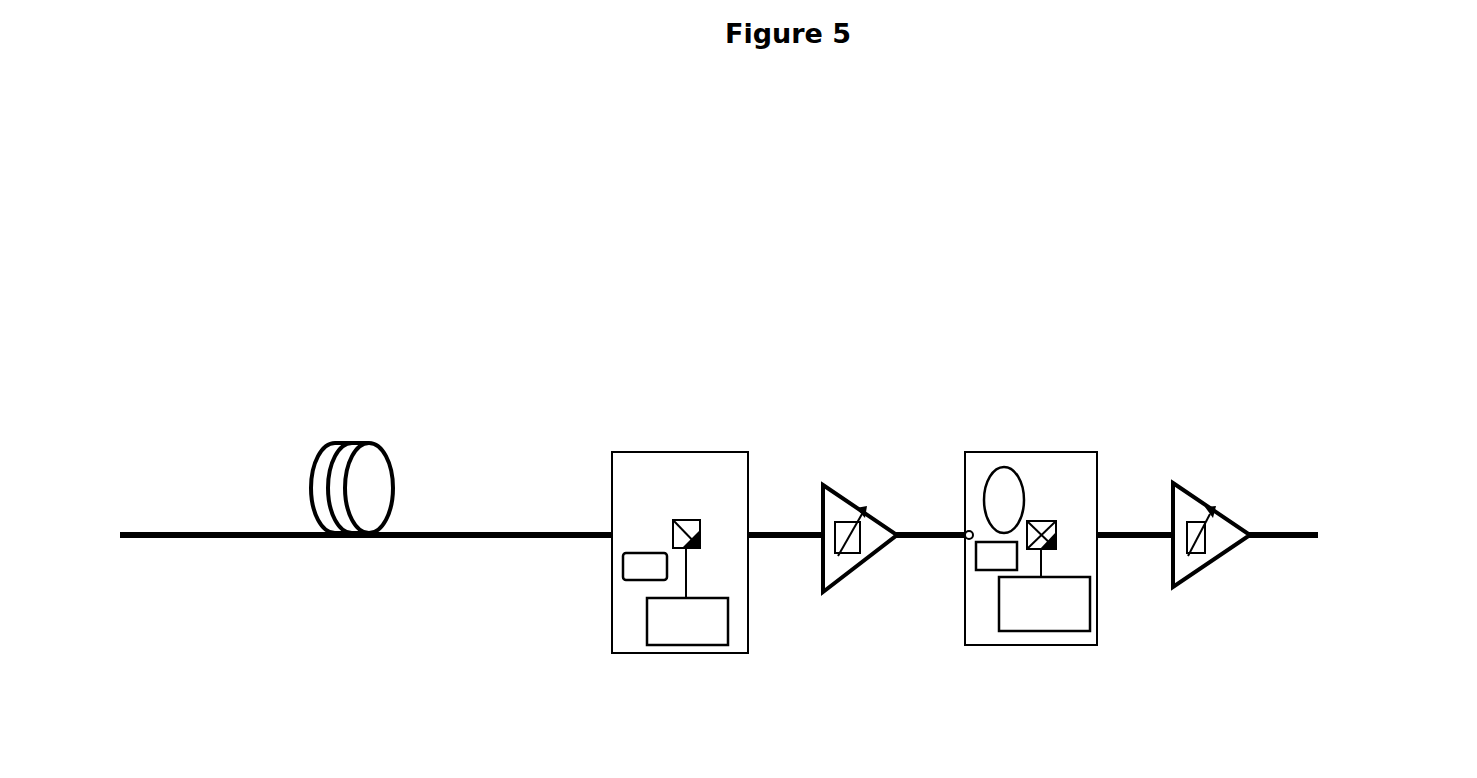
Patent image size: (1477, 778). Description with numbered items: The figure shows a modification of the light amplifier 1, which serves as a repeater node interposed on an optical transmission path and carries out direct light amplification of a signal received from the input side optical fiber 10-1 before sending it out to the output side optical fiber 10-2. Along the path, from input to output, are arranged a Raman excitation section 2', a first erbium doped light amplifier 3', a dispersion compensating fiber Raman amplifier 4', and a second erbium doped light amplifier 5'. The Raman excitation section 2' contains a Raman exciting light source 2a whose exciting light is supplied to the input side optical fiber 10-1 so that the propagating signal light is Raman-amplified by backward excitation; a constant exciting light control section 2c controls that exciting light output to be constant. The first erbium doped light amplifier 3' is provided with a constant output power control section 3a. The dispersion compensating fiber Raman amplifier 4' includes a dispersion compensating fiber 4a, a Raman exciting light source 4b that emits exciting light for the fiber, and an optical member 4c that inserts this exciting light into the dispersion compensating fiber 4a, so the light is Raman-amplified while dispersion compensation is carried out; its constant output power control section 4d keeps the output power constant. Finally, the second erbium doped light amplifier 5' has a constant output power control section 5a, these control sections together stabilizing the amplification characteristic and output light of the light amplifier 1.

The light amplifier 1 is at (973, 255).
The input side optical fiber 10-1 is at (365, 443).
The output side optical fiber 10-2 is at (1278, 535).
The Raman excitation section 2' is at (680, 508).
The Raman exciting light source 2a is at (647, 618).
The constant exciting light control section 2c is at (623, 567).
The first erbium doped light amplifier 3' is at (879, 502).
The constant output power control section 3a is at (855, 555).
The dispersion compensating fiber Raman amplifier 4' is at (1032, 470).
The dispersion compensating fiber 4a is at (1002, 467).
The Raman exciting light source 4b is at (1042, 645).
The optical member 4c is at (1030, 521).
The constant output power control section 4d is at (967, 539).
The second erbium doped light amplifier 5' is at (1229, 507).
The constant output power control section 5a is at (1200, 556).